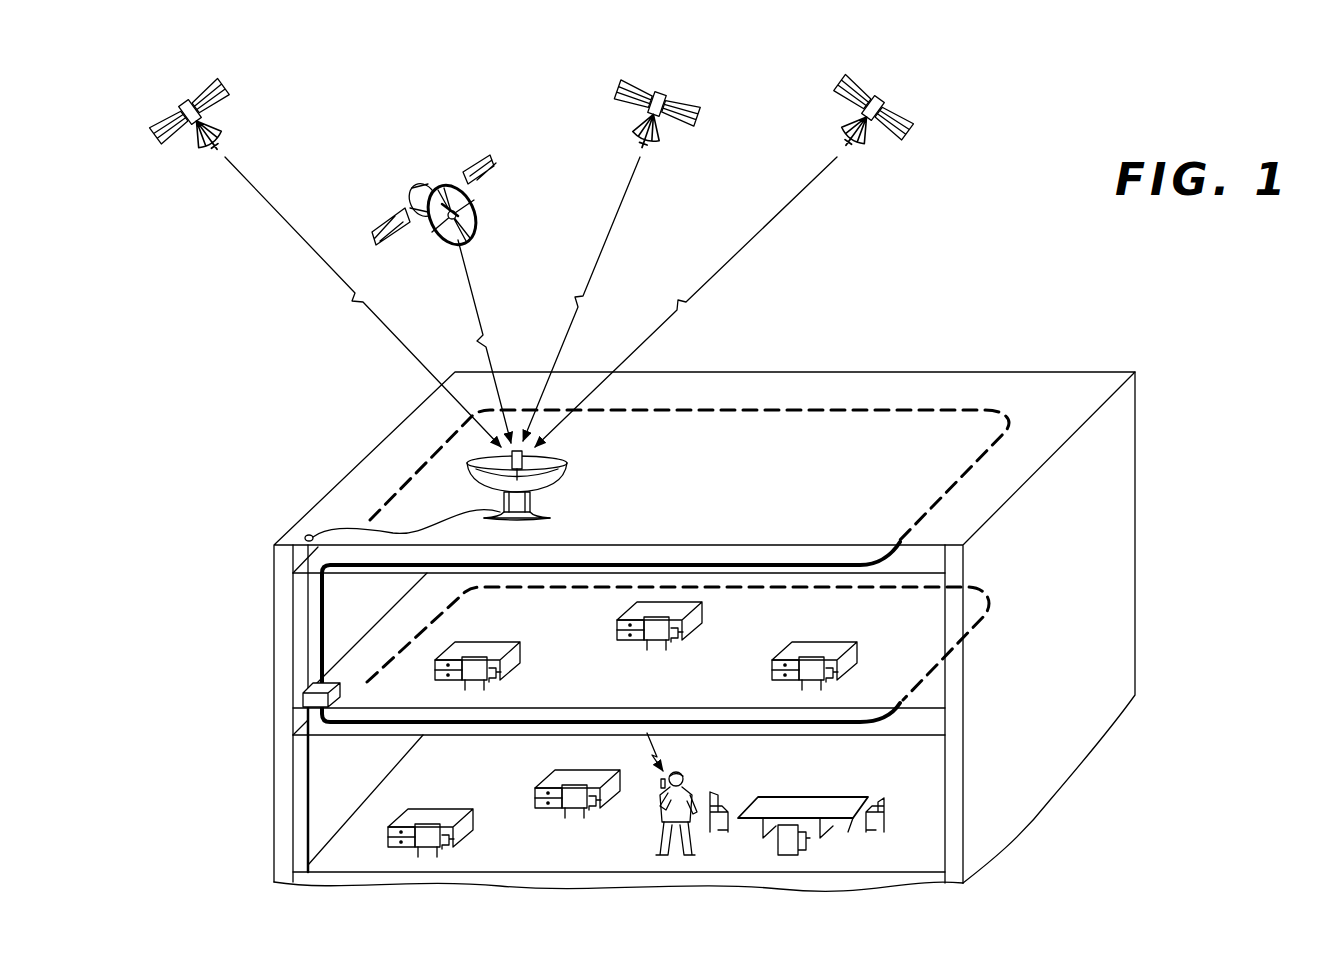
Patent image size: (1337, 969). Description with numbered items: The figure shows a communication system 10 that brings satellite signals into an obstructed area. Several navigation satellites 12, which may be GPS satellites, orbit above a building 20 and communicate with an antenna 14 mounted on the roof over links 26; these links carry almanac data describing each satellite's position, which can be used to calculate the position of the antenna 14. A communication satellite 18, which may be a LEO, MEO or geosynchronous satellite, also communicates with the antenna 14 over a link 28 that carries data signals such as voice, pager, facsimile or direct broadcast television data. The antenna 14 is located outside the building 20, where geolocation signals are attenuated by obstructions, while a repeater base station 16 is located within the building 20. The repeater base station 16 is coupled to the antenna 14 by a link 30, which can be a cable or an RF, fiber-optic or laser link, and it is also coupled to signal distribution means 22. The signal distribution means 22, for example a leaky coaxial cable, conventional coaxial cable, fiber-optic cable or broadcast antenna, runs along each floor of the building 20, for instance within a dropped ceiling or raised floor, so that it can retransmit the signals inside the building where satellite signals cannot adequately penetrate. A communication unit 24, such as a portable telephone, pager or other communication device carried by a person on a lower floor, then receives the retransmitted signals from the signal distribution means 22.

The communication system 10 is at (1204, 250).
The navigation satellites 12 is at (181, 93).
The antenna 14 is at (555, 483).
The repeater base station 16 is at (340, 690).
The communication satellite 18 is at (405, 182).
The building 20 is at (1042, 790).
The signal distribution means 22 is at (743, 562).
The communication unit 24 is at (663, 786).
The links 26 is at (302, 238).
The link 28 is at (473, 300).
The link 30 is at (340, 533).